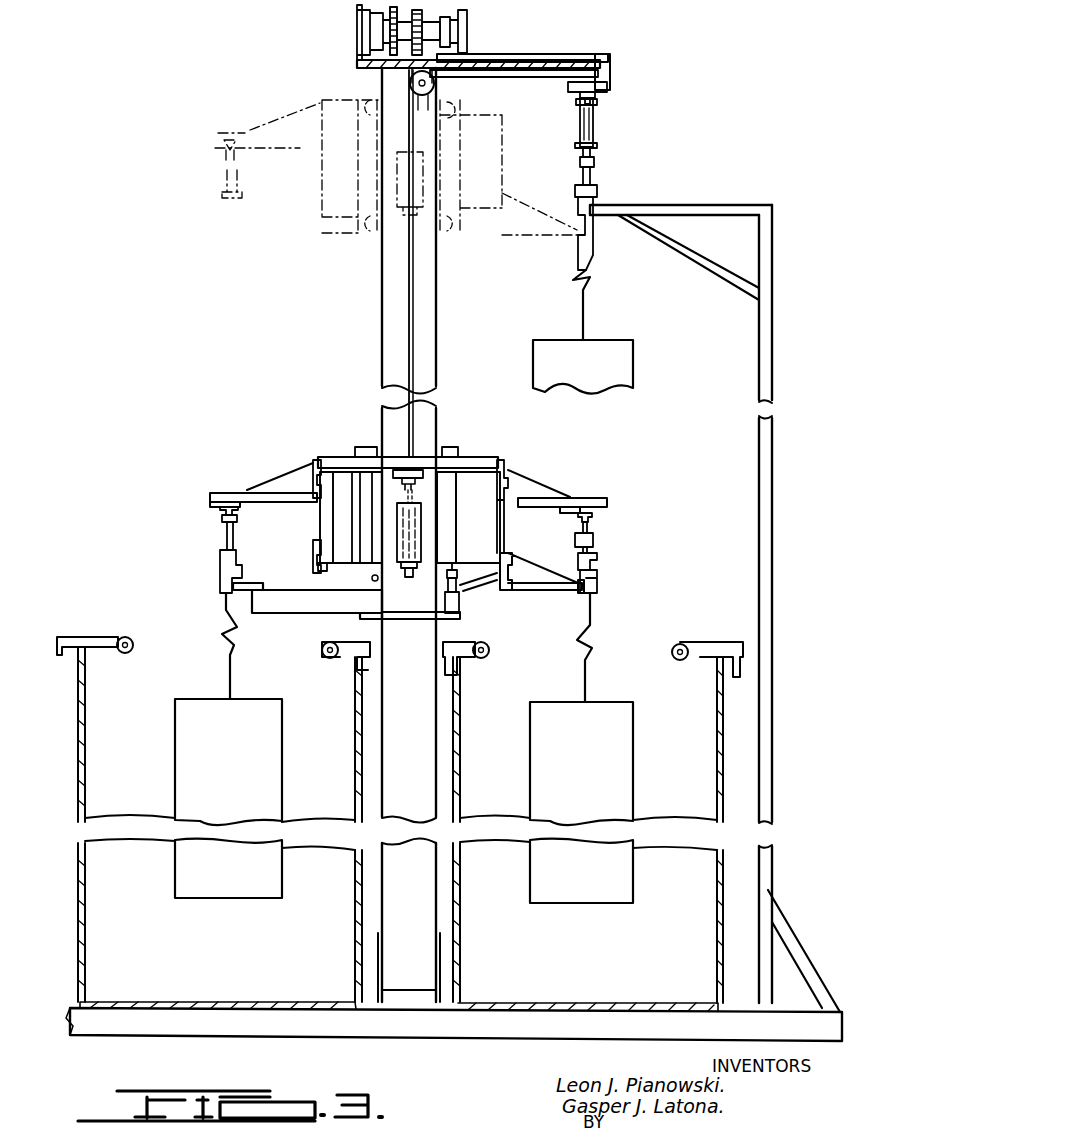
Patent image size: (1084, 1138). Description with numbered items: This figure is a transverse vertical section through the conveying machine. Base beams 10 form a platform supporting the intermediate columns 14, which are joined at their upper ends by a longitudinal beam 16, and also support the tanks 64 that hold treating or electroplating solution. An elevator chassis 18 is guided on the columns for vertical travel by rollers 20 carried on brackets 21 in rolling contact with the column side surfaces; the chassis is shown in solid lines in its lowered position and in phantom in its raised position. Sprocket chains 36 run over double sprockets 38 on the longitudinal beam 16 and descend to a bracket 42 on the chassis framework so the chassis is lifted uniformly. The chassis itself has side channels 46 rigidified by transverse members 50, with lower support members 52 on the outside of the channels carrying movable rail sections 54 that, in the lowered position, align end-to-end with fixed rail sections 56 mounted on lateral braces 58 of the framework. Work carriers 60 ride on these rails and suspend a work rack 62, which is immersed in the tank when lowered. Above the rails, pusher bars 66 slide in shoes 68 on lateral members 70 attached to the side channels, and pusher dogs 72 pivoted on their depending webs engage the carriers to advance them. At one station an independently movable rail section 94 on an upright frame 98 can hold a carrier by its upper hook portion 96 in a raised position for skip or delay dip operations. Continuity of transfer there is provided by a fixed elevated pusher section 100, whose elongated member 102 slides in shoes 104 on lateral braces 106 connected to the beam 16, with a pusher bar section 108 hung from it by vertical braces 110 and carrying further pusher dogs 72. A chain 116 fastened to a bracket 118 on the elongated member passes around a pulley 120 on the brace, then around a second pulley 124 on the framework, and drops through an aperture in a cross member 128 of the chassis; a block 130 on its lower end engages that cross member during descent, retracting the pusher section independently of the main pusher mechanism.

The base beams 10 is at (434, 1028).
The intermediate columns 14 is at (426, 268).
The longitudinal beam 16 is at (357, 30).
The elevator chassis 18 is at (310, 198).
The rollers 20 is at (366, 447).
The brackets 21 is at (448, 498).
The sprocket chains 36 is at (392, 12).
The double sprockets 38 is at (442, 26).
The bracket 42 is at (422, 555).
The side channels 46 is at (318, 533).
The transverse members 50 is at (484, 543).
The lower support members 52 is at (514, 592).
The movable rail sections 54 is at (600, 586).
The fixed rail sections 56 is at (224, 574).
The lateral braces 58 is at (283, 603).
The work carriers 60 is at (611, 254).
The work rack 62 is at (614, 378).
The tanks 64 is at (86, 910).
The pusher bars 66 is at (230, 504).
The shoes 68 is at (246, 493).
The lateral members 70 is at (302, 477).
The pusher dogs 72 is at (222, 522).
The rail section 94 is at (600, 200).
The upper hook portion 96 is at (602, 176).
The upright frame 98 is at (772, 348).
The pusher section 100 is at (610, 116).
The elongated member 102 is at (604, 97).
The shoes 104 is at (606, 86).
The lateral braces 106 is at (545, 56).
The pusher bar section 108 is at (600, 152).
The vertical braces 110 is at (582, 128).
The chain 116 is at (420, 173).
The bracket 118 is at (598, 70).
The pulley 120 is at (460, 100).
The second pulley 124 is at (434, 86).
The cross member 128 is at (436, 470).
The block 130 is at (410, 470).